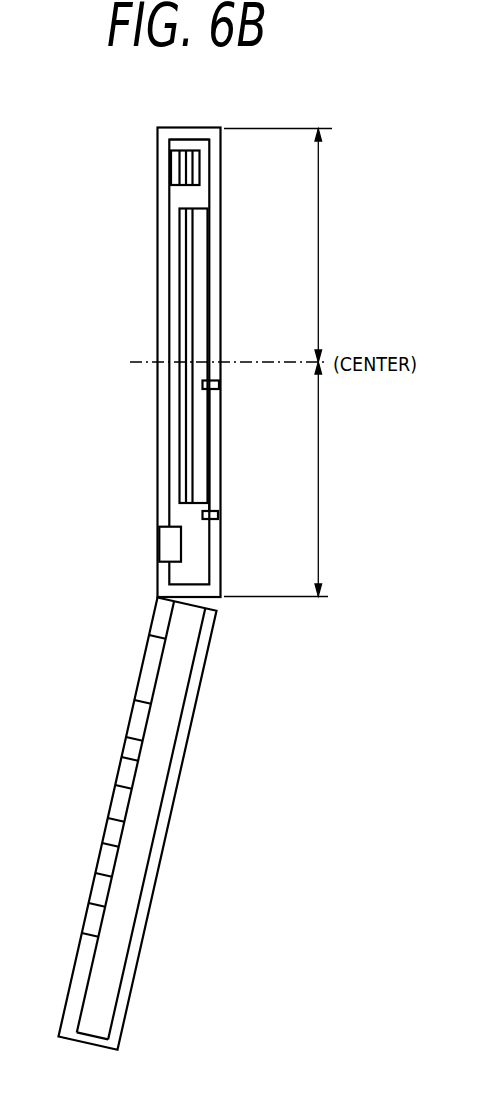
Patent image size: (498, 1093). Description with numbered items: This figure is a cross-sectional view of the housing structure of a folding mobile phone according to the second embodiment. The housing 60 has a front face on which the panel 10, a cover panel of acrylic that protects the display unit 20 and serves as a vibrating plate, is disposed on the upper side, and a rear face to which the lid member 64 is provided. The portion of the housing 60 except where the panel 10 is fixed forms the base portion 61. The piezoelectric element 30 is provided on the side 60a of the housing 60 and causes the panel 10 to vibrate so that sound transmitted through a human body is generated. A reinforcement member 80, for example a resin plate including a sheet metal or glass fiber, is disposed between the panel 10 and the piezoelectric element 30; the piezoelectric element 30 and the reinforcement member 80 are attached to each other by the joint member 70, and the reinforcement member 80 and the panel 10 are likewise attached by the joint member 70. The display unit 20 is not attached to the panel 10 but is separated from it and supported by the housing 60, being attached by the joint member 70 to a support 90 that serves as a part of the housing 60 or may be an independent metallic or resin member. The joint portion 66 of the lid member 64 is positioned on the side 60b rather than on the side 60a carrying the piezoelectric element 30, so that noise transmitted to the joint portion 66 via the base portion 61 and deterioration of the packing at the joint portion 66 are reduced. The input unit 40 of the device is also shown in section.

The panel 10 is at (160, 207).
The display unit 20 is at (182, 335).
The piezoelectric element 30 is at (193, 165).
The input unit 40 is at (165, 543).
The housing 60 is at (217, 198).
The side of the housing 60a is at (339, 245).
The side of the housing 60b is at (339, 479).
The base portion 61 is at (204, 131).
The lid member 64 is at (217, 443).
The joint portion 66 is at (215, 383).
The joint member 70 is at (176, 150).
The reinforcement member 80 is at (180, 175).
The support 90 is at (202, 262).